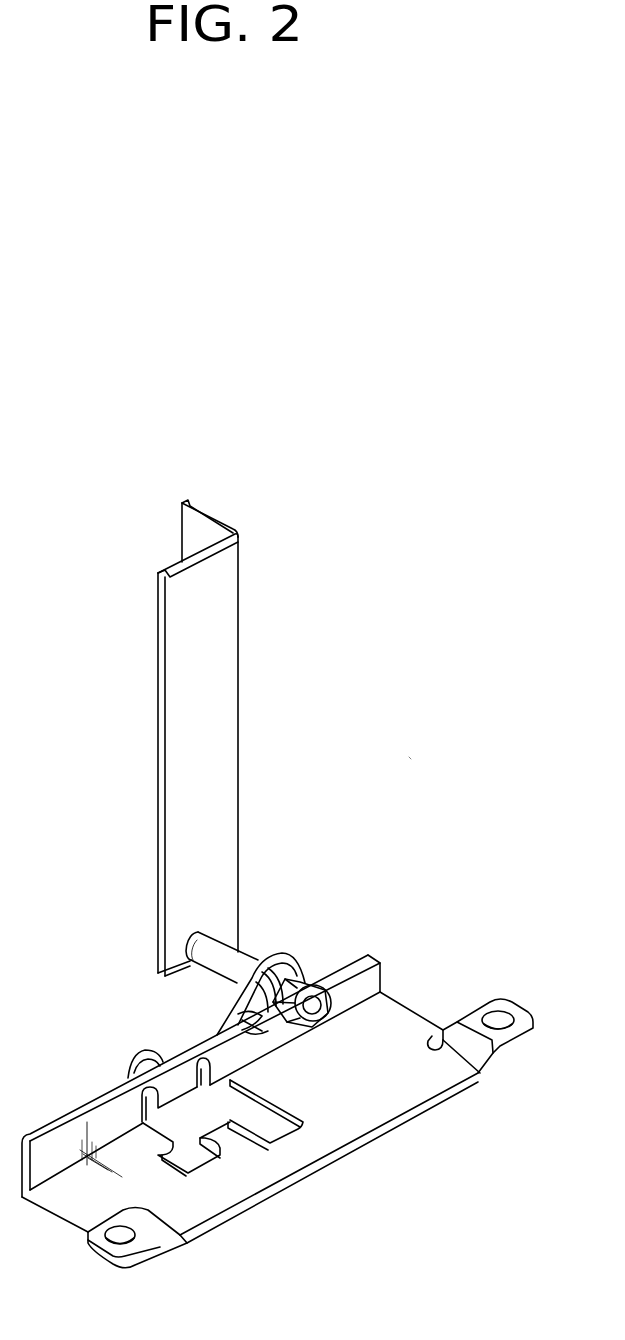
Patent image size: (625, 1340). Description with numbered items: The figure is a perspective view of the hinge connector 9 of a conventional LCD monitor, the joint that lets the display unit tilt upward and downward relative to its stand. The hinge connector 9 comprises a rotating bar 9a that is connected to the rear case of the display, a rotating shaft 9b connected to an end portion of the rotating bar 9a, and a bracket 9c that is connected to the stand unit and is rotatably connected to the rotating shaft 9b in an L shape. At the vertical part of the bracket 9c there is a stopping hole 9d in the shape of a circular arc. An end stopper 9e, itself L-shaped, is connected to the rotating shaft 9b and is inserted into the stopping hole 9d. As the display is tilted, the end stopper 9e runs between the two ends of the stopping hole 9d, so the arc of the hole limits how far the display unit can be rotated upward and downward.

The hinge connector 9 is at (410, 758).
The rotating bar 9a is at (222, 762).
The rotating shaft 9b is at (237, 957).
The bracket 9c is at (401, 1017).
The stopping hole 9d is at (218, 1033).
The end stopper 9e is at (240, 1017).